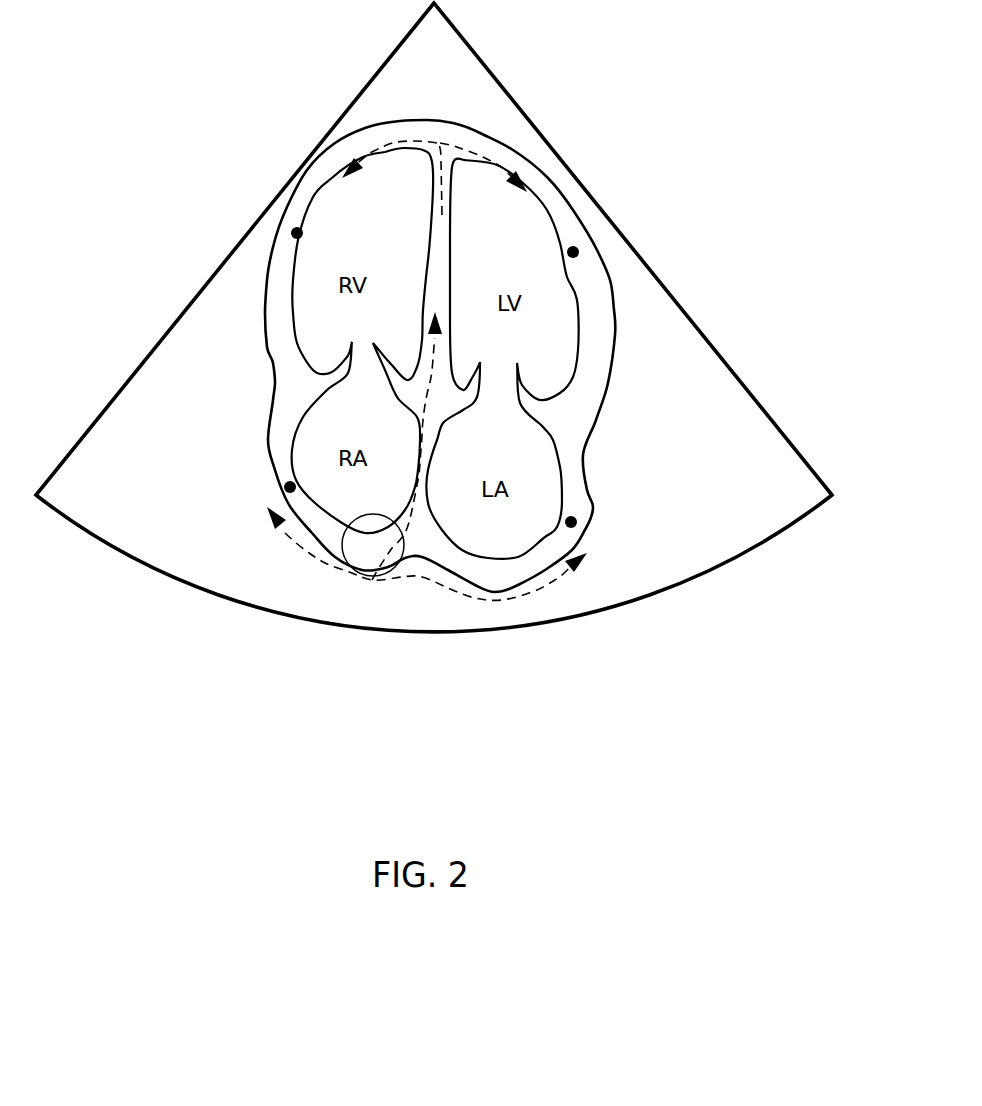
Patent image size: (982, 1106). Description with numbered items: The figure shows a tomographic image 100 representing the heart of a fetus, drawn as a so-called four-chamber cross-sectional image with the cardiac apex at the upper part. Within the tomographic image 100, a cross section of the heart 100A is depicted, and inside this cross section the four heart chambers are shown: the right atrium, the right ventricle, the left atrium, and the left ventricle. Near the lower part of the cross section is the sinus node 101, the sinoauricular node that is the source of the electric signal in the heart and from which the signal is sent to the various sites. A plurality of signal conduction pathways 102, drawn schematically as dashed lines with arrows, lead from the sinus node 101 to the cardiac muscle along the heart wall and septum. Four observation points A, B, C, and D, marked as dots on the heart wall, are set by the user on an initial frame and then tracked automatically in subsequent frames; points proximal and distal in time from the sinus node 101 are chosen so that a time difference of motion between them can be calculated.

The tomographic image 100 is at (534, 127).
The cross section of the heart 100A is at (614, 322).
The sinus node 101 is at (366, 576).
The signal conduction pathways 102 is at (387, 147).
The observation point A is at (290, 487).
The observation point B is at (571, 522).
The observation point C is at (573, 252).
The observation point D is at (297, 233).